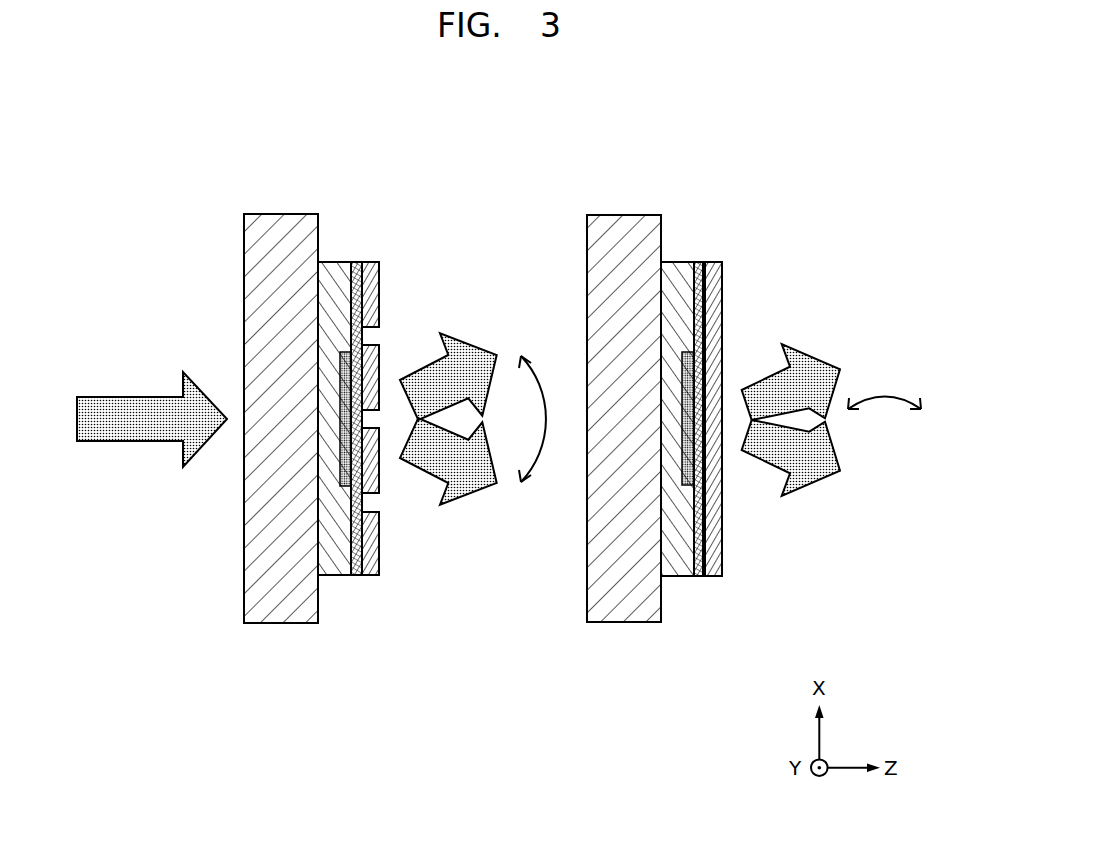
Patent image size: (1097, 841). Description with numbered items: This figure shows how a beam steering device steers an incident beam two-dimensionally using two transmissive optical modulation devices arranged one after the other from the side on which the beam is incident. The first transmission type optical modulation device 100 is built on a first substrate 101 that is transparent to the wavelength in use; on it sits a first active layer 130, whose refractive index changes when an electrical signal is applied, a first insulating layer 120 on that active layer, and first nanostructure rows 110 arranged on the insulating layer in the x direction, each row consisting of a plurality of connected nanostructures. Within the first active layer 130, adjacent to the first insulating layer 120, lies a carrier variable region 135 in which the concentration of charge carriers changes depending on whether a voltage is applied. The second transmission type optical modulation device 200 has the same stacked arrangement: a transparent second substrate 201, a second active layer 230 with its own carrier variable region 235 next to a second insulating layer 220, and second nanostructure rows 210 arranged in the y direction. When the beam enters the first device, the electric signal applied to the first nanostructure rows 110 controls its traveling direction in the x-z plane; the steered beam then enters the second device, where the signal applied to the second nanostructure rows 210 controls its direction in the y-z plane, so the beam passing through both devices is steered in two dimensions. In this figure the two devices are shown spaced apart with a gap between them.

The first transmission type optical modulation device 100 is at (352, 206).
The first substrate 101 is at (282, 612).
The first nanostructure rows 110 is at (373, 571).
The first insulating layer 120 is at (357, 576).
The first active layer 130 is at (333, 568).
The carrier variable region 135 is at (342, 476).
The second transmission type optical modulation device 200 is at (692, 206).
The second substrate 201 is at (623, 612).
The second nanostructure rows 210 is at (716, 571).
The second insulating layer 220 is at (698, 576).
The second active layer 230 is at (676, 568).
The carrier variable region 235 is at (684, 476).